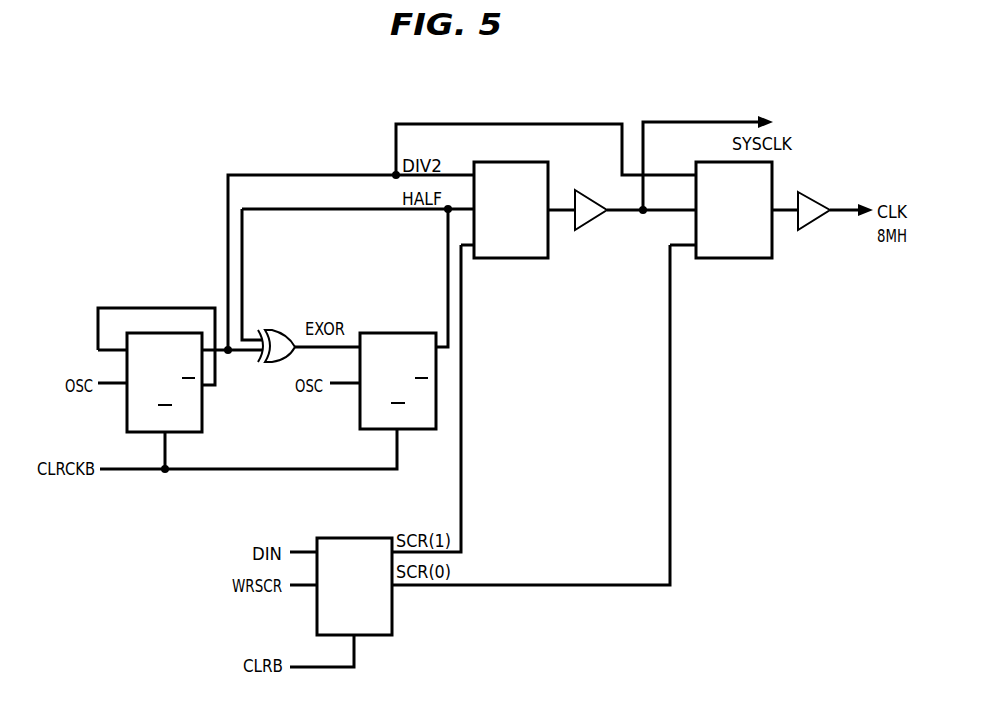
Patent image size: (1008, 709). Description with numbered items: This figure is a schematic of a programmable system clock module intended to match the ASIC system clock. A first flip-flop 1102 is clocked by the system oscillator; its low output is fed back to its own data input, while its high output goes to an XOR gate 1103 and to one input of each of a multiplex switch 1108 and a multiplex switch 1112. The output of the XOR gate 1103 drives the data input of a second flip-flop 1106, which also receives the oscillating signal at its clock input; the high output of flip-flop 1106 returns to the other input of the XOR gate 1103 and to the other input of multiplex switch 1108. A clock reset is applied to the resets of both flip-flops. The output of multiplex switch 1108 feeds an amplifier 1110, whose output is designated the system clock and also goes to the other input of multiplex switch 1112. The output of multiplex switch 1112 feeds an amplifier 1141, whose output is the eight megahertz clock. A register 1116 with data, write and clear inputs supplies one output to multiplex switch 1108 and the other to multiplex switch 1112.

The first flip-flop 1102 is at (202, 412).
The XOR gate 1103 is at (292, 330).
The flip-flop 1106 is at (360, 417).
The multiplex switch 1108 is at (510, 258).
The amplifier 1110 is at (597, 192).
The multiplex switch 1112 is at (772, 243).
The amplifier 1141 is at (828, 200).
The register 1116 is at (392, 617).